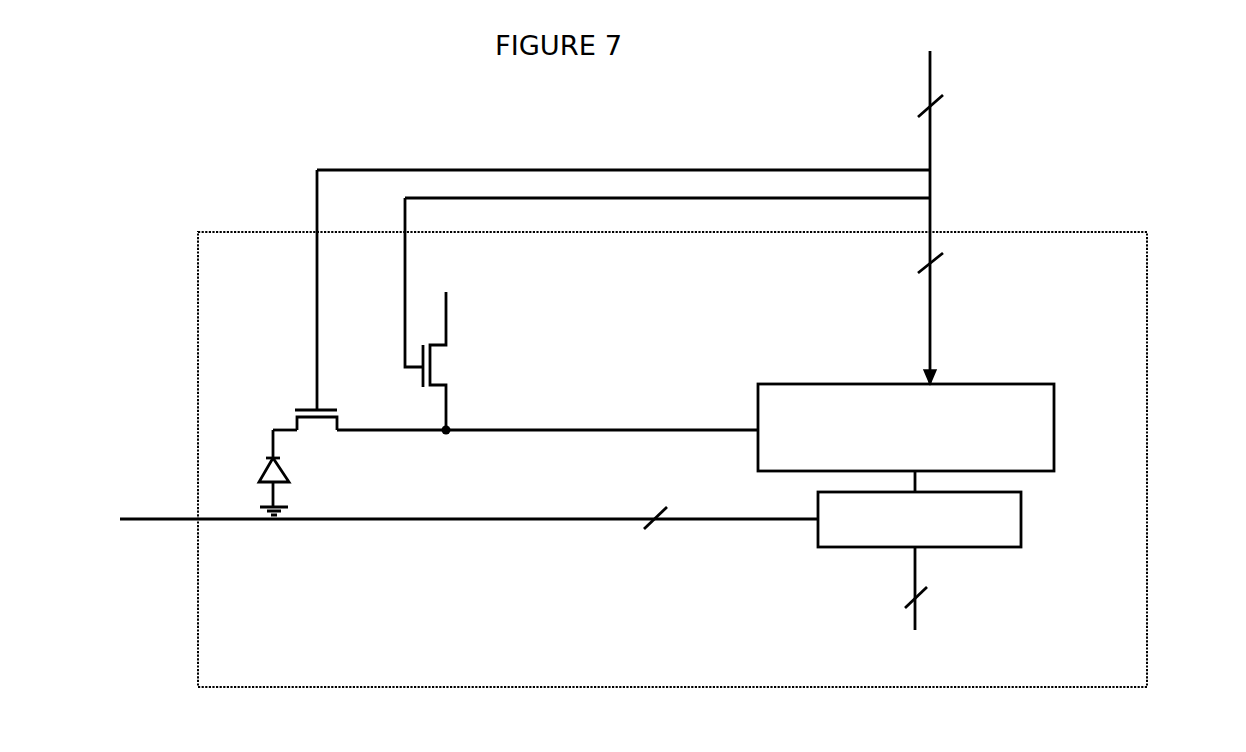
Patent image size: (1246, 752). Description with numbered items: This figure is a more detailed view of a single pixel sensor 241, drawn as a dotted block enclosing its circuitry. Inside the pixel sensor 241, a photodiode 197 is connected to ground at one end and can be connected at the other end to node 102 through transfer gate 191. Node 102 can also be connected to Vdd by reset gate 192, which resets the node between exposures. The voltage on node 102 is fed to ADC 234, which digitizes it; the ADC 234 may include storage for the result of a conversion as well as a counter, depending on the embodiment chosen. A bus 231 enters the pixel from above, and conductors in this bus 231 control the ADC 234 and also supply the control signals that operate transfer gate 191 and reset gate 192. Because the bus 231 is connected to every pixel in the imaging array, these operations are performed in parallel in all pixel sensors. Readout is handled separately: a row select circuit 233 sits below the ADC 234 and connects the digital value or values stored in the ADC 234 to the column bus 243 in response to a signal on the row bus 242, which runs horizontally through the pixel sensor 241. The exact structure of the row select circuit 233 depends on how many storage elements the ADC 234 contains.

The bus 231 is at (935, 67).
The ADC 234 is at (810, 384).
The row select circuit 233 is at (1022, 503).
The pixel sensor 241 is at (1147, 457).
The column bus 243 is at (918, 627).
The row bus 242 is at (455, 519).
The transfer gate 191 is at (307, 406).
The reset gate 192 is at (422, 377).
The photodiode 197 is at (283, 465).
The node 102 is at (468, 434).